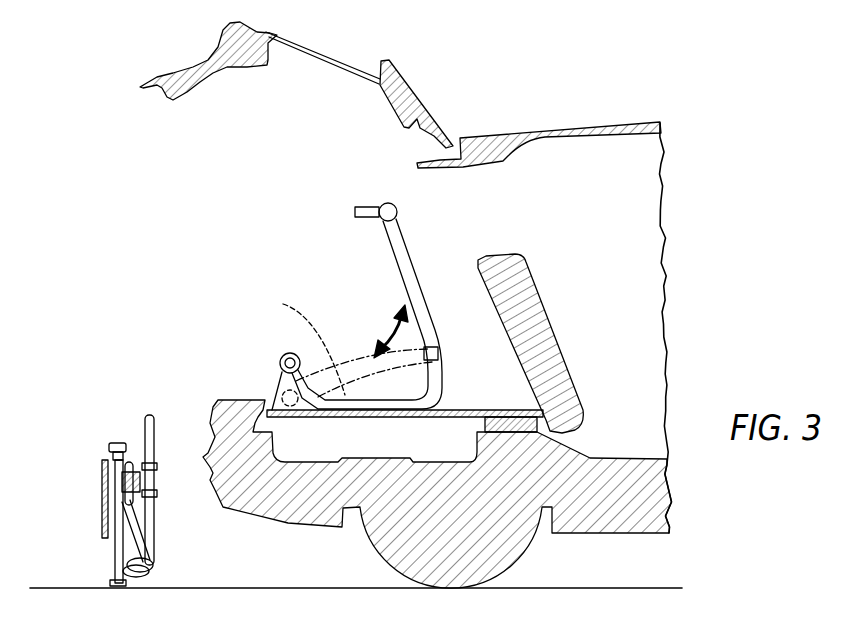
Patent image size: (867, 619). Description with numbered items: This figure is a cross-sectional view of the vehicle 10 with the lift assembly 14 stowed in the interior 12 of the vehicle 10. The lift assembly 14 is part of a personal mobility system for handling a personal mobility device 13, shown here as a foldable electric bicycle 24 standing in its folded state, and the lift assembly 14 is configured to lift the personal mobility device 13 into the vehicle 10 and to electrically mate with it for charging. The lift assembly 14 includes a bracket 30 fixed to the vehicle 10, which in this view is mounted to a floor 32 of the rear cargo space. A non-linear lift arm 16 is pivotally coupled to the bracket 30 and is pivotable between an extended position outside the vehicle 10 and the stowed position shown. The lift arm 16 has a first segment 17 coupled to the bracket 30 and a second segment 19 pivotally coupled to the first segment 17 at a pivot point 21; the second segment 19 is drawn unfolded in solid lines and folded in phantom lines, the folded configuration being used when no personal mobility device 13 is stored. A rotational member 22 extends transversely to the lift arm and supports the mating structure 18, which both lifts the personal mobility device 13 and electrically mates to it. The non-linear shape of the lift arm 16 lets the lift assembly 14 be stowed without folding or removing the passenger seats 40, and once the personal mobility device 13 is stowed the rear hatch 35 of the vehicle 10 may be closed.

The vehicle 10 is at (580, 128).
The interior 12 is at (618, 205).
The personal mobility device 13 is at (87, 500).
The electric bicycle 24 is at (108, 558).
The lift assembly 14 is at (373, 287).
The lift arm 16 is at (374, 309).
The first segment 17 is at (363, 410).
The mating structure 18 is at (358, 207).
The second segment 19 is at (419, 297).
The pivot point 21 is at (438, 353).
The rotational member 22 is at (397, 210).
The bracket 30 is at (275, 392).
The floor 32 is at (463, 410).
The rear hatch 35 is at (197, 72).
The passenger seats 40 is at (540, 337).